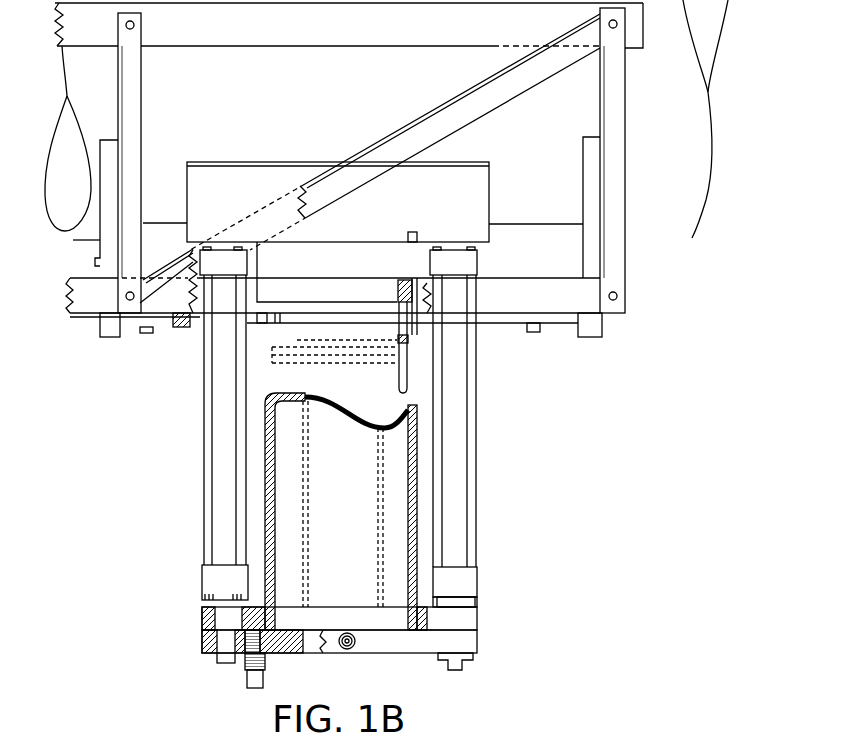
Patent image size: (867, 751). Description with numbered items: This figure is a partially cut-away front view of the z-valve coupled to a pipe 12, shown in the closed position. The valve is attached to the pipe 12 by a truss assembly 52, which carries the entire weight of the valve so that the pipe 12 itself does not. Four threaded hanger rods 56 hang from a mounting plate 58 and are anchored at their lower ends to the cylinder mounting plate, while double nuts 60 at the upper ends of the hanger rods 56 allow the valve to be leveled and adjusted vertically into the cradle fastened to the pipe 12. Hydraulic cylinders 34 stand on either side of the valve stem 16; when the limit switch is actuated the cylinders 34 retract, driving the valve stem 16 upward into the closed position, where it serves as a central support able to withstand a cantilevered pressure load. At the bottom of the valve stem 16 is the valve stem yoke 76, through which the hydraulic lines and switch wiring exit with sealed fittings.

The pipe 12 is at (680, 163).
The truss assembly 52 is at (640, 271).
The mounting plate 58 is at (513, 286).
The hanger rods 56 is at (391, 288).
The double nuts 60 is at (262, 338).
The hydraulic cylinders 34 is at (230, 503).
The valve stem 16 is at (365, 529).
The valve stem yoke 76 is at (200, 650).